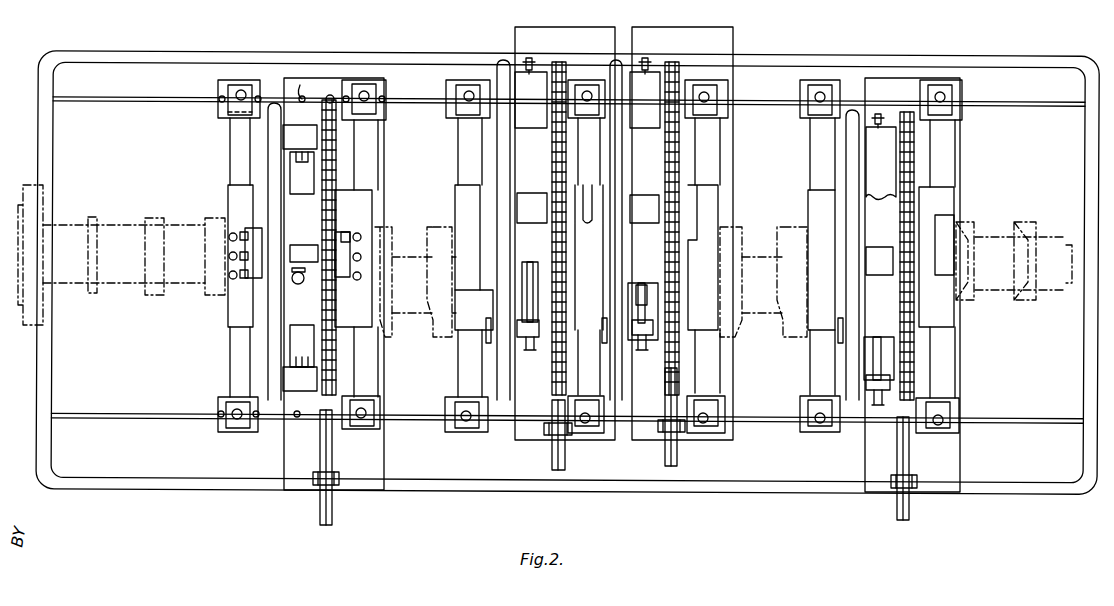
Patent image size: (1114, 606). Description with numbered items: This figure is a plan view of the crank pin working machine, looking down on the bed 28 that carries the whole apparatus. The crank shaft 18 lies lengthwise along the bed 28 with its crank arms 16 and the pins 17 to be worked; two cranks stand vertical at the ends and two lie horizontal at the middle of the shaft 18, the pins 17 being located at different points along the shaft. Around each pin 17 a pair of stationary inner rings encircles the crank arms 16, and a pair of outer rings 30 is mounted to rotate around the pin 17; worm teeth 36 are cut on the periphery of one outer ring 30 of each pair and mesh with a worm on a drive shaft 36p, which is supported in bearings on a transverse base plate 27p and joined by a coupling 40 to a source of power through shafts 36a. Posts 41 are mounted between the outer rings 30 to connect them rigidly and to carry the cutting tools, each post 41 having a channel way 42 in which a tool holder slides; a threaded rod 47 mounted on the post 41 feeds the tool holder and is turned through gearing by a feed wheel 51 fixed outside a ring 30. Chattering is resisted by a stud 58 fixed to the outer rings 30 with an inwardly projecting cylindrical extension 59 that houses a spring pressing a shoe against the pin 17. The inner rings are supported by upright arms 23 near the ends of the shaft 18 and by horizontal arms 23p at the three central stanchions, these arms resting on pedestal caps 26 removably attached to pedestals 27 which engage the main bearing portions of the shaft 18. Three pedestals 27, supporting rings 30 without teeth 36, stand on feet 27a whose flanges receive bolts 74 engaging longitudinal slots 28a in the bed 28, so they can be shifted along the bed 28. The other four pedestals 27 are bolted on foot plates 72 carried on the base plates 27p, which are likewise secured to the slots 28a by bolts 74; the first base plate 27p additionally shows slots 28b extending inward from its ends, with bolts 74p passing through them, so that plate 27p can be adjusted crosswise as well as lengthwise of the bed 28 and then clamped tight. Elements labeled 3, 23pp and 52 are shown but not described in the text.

The shaft 3 is at (198, 257).
The crank arms 16 is at (158, 222).
The pin 17 is at (184, 290).
The crank shaft 18 is at (126, 290).
The arms 23 is at (240, 285).
The arms 23p is at (480, 190).
The bearing block 23'' 23pp is at (605, 188).
The pedestal caps 26 is at (232, 235).
The pedestals 27 is at (980, 364).
The base plate 27p is at (306, 478).
The feet 27a is at (225, 112).
The bed 28 is at (765, 495).
The longitudinal slots 28a is at (160, 418).
The slots 28b is at (330, 95).
The outer rings 30 is at (274, 100).
The worm teeth 36 is at (338, 148).
The drive shaft 36p is at (333, 455).
The shafts 36a is at (556, 470).
The coupling 40 is at (340, 476).
The posts 41 is at (908, 43).
The channel way 42 is at (645, 285).
The rod 47 is at (298, 285).
The feed wheel 51 is at (486, 340).
The set screw 52 is at (530, 58).
The stud 58 is at (588, 258).
The cylindrical extension 59 is at (303, 180).
The foot plates 72 is at (380, 410).
The bolts 74 is at (226, 80).
The bolts 74p is at (300, 85).